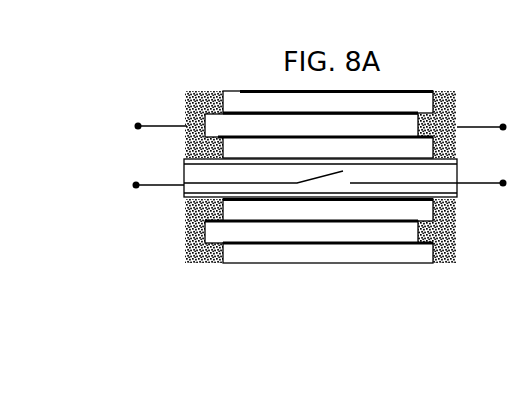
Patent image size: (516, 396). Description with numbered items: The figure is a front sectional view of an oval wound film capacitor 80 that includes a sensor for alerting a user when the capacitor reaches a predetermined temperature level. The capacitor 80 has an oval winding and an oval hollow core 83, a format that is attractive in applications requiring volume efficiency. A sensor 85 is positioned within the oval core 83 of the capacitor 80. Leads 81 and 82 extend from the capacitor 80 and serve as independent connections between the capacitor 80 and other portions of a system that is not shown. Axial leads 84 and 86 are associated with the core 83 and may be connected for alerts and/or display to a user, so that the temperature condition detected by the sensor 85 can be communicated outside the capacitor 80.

The oval capacitor 80 is at (190, 70).
The lead 81 is at (138, 126).
The lead 82 is at (503, 127).
The oval hollow core 83 is at (183, 172).
The axial lead 84 is at (136, 185).
The sensor 85 is at (331, 186).
The axial lead 86 is at (503, 183).